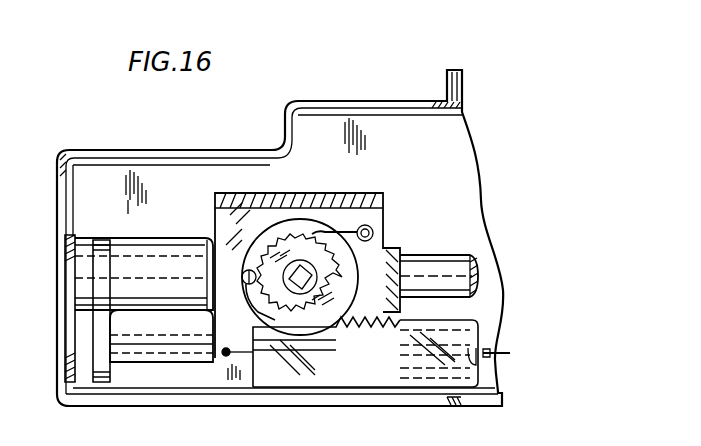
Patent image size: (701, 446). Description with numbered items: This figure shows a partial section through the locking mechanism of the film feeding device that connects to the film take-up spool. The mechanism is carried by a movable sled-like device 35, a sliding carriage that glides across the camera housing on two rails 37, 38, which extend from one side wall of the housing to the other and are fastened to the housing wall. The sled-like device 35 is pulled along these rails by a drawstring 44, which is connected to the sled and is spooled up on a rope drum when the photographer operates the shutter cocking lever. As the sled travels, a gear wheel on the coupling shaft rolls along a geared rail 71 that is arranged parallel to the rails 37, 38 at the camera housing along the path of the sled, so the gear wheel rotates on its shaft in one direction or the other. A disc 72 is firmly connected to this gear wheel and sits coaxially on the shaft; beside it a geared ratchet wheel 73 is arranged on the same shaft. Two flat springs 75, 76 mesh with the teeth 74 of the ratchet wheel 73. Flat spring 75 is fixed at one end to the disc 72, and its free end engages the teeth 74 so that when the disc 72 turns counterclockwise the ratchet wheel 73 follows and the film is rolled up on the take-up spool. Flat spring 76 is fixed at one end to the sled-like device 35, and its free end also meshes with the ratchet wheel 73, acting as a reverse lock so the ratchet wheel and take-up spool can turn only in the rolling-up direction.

The sled-like device 35 is at (228, 221).
The rail 37 is at (153, 352).
The rail 38 is at (466, 262).
The drawstring 44 is at (510, 354).
The geared rail 71 is at (470, 326).
The disc 72 is at (292, 223).
The geared ratchet wheel 73 is at (384, 245).
The teeth 74 is at (328, 318).
The flat spring 75 is at (250, 305).
The flat spring 76 is at (353, 231).